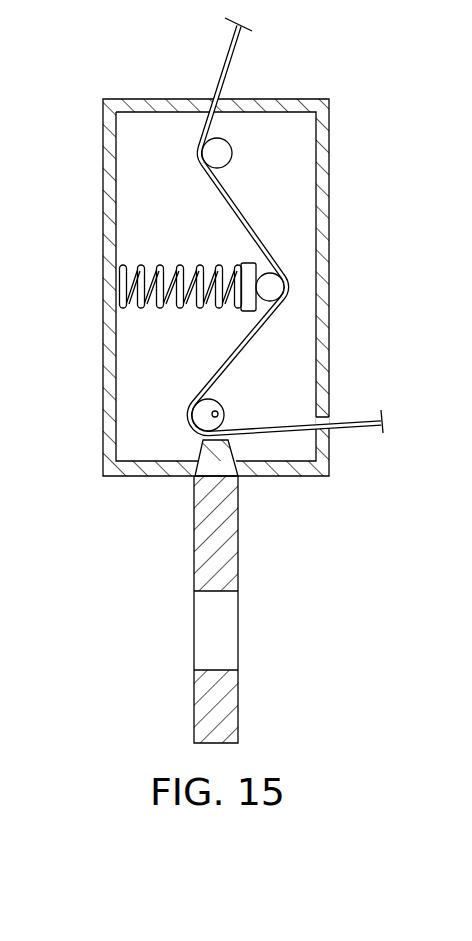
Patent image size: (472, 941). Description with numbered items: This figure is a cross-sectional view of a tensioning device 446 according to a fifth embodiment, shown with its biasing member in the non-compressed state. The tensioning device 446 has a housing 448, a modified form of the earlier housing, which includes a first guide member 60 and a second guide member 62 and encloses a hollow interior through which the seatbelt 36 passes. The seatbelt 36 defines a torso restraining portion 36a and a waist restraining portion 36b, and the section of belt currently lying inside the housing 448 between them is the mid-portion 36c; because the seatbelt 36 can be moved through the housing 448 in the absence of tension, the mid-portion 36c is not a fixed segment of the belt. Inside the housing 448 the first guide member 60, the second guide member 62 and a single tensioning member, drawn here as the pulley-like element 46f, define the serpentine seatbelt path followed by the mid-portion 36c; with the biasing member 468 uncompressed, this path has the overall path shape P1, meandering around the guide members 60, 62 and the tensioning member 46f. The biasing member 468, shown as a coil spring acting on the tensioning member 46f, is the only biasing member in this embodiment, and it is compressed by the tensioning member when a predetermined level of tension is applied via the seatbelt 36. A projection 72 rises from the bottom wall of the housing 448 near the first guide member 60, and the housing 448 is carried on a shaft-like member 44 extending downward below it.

The tensioning device 446 is at (222, 264).
The housing 448 is at (322, 130).
The seatbelt 36 is at (269, 226).
The waist restraining portion 36b is at (232, 44).
The mid-portion 36c is at (232, 365).
The torso restraining portion 36a is at (360, 421).
The second guide member 62 is at (217, 155).
The movable pulley 46f is at (271, 287).
The biasing member 468 is at (199, 309).
The first guide member 60 is at (202, 417).
The projection 72 is at (234, 452).
The shaft 44 is at (215, 533).
The overall path shape P1 is at (225, 207).